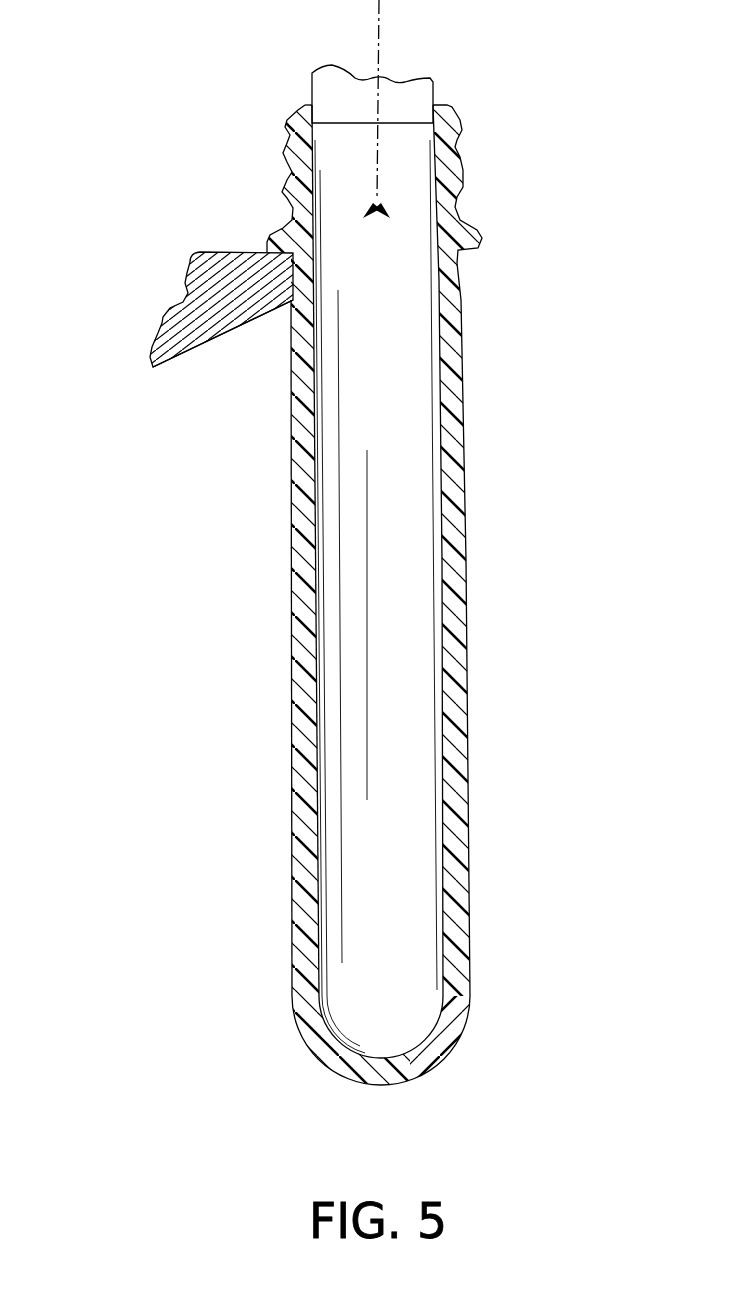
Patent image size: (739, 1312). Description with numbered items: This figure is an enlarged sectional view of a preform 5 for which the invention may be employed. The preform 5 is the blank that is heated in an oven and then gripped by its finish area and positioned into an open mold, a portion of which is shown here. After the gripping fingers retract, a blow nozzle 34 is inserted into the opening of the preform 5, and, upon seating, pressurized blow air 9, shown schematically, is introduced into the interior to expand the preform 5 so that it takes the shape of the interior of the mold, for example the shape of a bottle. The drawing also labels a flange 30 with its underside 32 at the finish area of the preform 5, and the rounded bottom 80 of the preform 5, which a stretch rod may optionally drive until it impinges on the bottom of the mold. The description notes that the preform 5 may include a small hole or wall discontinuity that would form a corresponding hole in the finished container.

The preform 5 is at (505, 350).
The blow air 9 is at (372, 28).
The flange 30 is at (146, 285).
The flange underside 32 is at (203, 347).
The blow nozzle 34 is at (420, 62).
The rounded bottom of tube 80 is at (401, 1029).